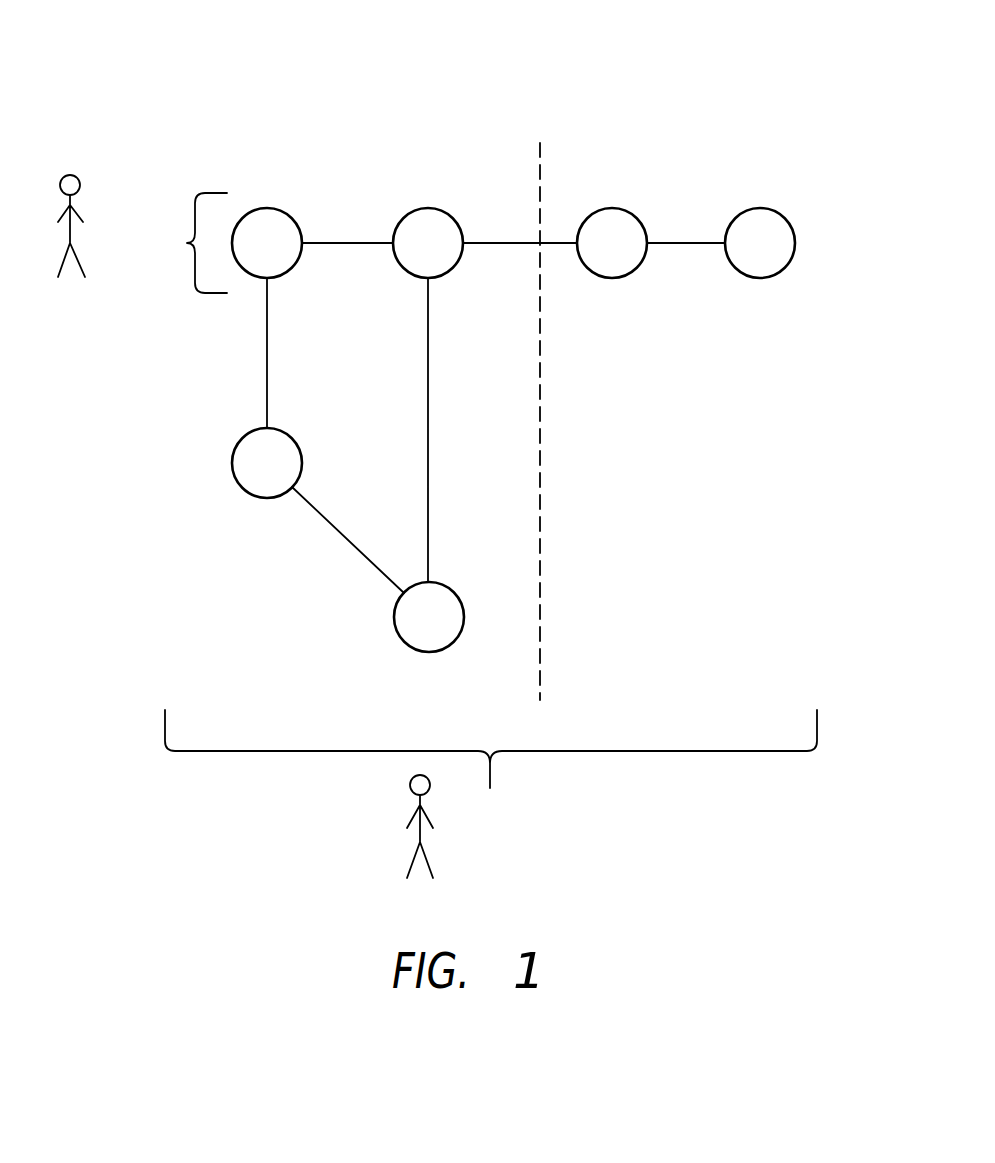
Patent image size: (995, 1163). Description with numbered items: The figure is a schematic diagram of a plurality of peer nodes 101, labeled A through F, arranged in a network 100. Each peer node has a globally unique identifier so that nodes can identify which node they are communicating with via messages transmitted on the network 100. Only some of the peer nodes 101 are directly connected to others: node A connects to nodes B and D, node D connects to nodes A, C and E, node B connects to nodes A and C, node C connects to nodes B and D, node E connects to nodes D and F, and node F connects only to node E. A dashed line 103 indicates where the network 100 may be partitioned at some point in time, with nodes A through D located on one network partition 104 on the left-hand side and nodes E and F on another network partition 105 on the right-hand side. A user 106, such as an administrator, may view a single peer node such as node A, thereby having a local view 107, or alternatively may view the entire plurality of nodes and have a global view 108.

The network 100 is at (538, 63).
The peer node 101 is at (290, 213).
The dashed line 103 is at (543, 158).
The network partition 104 is at (395, 158).
The network partition 105 is at (672, 145).
The user 106 is at (62, 267).
The local view 107 is at (187, 243).
The global view 108 is at (491, 794).